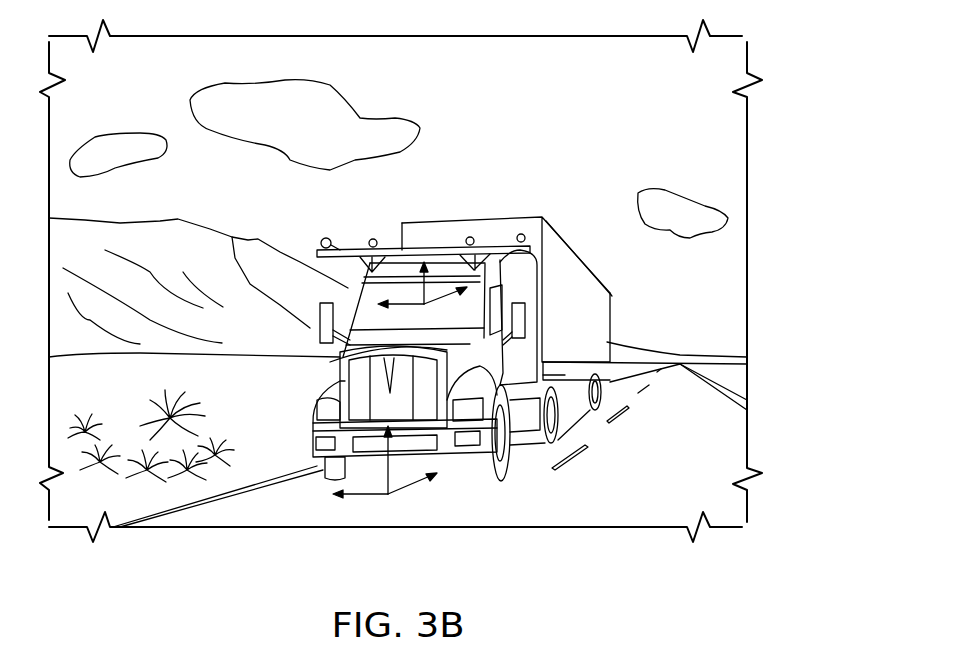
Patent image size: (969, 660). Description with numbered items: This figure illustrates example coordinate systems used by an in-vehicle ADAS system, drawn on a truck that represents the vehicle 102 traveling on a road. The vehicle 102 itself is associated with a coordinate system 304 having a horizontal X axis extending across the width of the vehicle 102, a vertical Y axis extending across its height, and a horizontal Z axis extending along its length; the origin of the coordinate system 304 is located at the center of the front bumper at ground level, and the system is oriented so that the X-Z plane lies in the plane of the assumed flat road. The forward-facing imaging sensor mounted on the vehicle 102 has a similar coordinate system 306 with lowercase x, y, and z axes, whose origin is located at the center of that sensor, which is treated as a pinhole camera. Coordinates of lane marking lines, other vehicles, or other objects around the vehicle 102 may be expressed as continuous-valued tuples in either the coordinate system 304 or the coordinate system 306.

The vehicle 102 is at (572, 243).
The coordinate system 304 is at (401, 504).
The coordinate system 306 is at (445, 247).